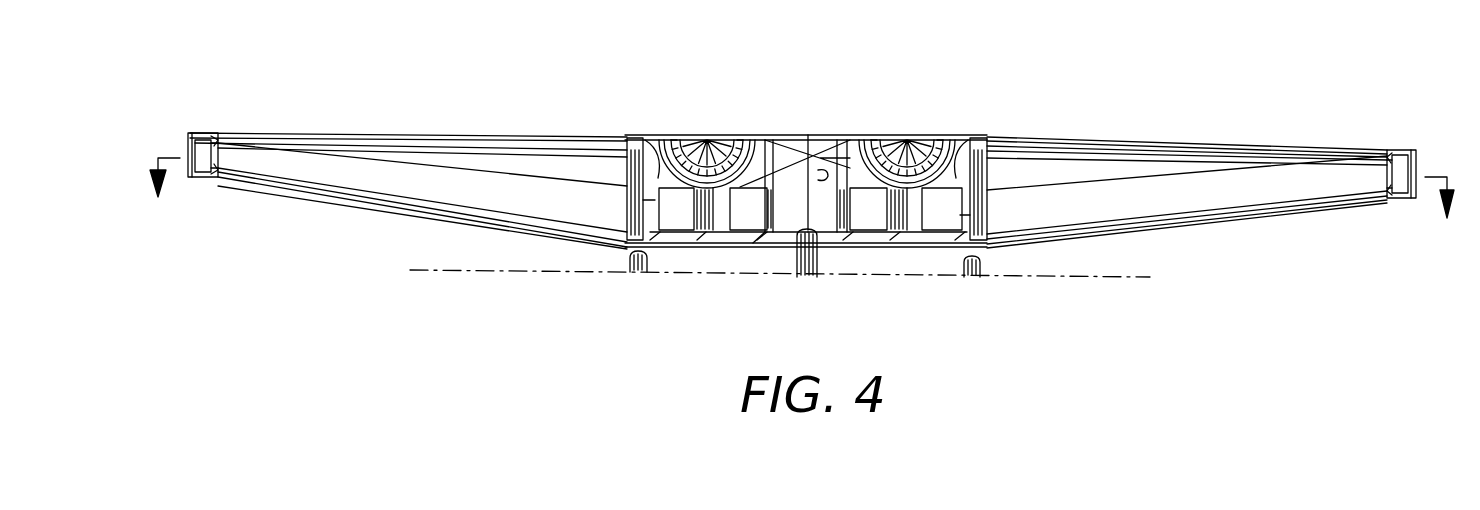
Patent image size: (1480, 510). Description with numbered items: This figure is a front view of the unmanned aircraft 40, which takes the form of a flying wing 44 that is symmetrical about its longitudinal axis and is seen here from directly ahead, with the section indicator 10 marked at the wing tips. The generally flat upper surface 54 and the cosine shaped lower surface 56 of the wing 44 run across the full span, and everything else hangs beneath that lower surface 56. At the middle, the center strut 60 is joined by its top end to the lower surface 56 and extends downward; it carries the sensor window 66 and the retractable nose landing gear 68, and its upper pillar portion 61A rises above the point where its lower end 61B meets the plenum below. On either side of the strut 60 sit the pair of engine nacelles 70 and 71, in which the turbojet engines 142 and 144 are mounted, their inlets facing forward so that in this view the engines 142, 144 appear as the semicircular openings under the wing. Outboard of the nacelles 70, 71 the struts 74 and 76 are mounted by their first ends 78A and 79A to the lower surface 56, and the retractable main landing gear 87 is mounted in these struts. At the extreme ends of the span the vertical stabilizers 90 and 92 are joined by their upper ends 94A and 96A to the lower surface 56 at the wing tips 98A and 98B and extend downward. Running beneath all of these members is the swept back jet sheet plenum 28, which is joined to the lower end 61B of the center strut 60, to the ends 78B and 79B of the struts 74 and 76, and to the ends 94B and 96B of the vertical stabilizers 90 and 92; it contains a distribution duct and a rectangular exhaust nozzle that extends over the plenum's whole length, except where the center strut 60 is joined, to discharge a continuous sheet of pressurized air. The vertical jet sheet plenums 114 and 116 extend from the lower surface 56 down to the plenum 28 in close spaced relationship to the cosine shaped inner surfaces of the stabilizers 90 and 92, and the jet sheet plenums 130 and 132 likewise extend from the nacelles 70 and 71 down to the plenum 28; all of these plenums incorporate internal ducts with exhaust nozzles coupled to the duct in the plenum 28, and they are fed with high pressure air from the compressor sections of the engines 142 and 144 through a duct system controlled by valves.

The section line 10- 10 is at (802, 208).
The swept back jet sheet plenum 28 is at (370, 212).
The unmanned aircraft 40 is at (1090, 58).
The flying wing 44 is at (487, 120).
The upper surface 54 is at (340, 133).
The lower surface 56 is at (437, 142).
The center strut 60 is at (838, 232).
The upper pillar 61A is at (776, 136).
The end of the center strut 61B is at (760, 238).
The sensor window 66 is at (812, 138).
The retractable nose landing gear 68 is at (795, 265).
The engine nacelle 70 is at (649, 140).
The engine nacelle 71 is at (967, 140).
The strut 74 is at (618, 202).
The strut 76 is at (995, 216).
The first end of strut 78A is at (628, 138).
The end of strut 78B is at (612, 246).
The first end of strut 79A is at (1010, 140).
The end of strut 79B is at (960, 246).
The retractable main landing gear 87 is at (655, 268).
The vertical stabilizer 90 is at (188, 134).
The vertical stabilizer 92 is at (1416, 158).
The upper end of vertical stabilizer 94A is at (216, 137).
The end of vertical stabilizer 94B is at (190, 178).
The upper end of vertical stabilizer 96A is at (1392, 150).
The end of vertical stabilizer 96B is at (1408, 199).
The wing tip 98A is at (212, 139).
The wing tip 98B is at (1392, 152).
The vertical jet sheet plenum 114 is at (218, 152).
The vertical jet sheet plenum 116 is at (1387, 170).
The jet sheet plenum 130 is at (696, 232).
The jet sheet plenum 132 is at (880, 236).
The turbojet engine 142 is at (732, 135).
The turbojet engine 144 is at (930, 135).